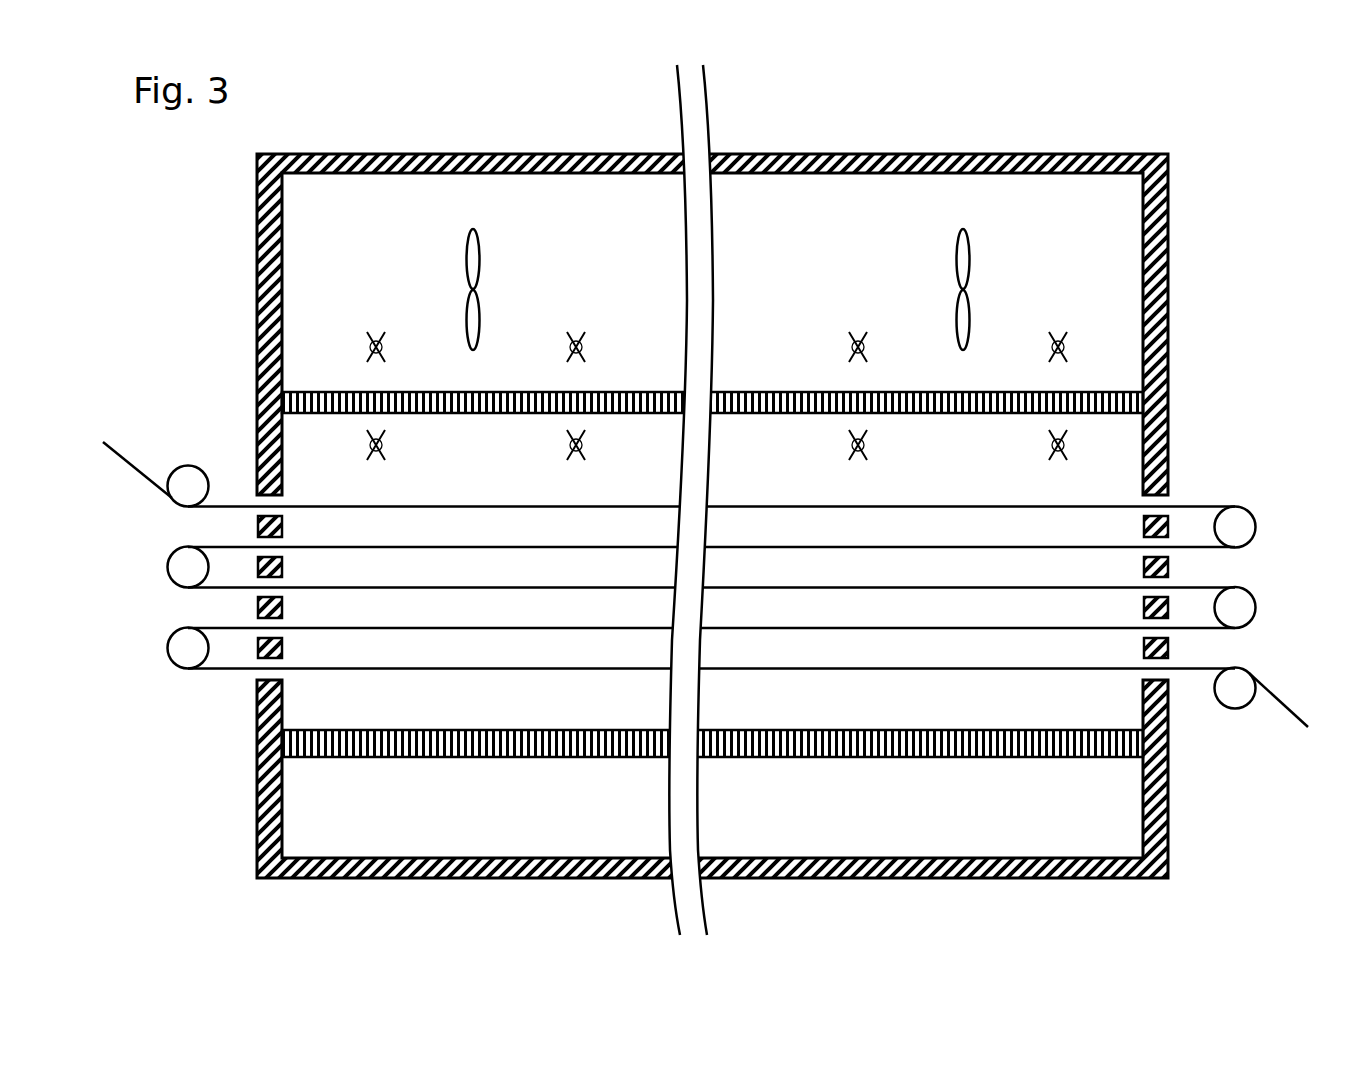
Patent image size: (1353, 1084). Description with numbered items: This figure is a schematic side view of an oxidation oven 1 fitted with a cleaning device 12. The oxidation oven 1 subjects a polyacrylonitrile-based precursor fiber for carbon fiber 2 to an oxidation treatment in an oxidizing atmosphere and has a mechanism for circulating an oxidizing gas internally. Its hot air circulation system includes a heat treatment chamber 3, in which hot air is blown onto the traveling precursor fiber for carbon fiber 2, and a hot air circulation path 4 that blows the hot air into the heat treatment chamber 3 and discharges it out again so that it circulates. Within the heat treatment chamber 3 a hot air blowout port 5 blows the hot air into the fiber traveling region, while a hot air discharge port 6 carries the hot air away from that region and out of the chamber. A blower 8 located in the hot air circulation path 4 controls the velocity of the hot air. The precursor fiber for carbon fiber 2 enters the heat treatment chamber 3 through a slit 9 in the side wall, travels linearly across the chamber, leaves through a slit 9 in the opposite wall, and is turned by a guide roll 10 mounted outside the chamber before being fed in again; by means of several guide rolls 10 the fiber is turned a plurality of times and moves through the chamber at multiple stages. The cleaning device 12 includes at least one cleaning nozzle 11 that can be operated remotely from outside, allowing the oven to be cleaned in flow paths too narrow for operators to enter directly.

The oxidation oven 1 is at (714, 516).
The precursor fiber for carbon fiber 2 is at (118, 450).
The heat treatment chamber 3 is at (307, 690).
The hot air circulation path 4 is at (310, 278).
The hot air blowout port 5 is at (1128, 400).
The hot air discharge port 6 is at (1125, 740).
The blower 8 is at (473, 228).
The slit 9 is at (257, 494).
The guide roll 10 is at (180, 470).
The cleaning nozzle 11 is at (389, 334).
The cleaning device 12 is at (368, 343).